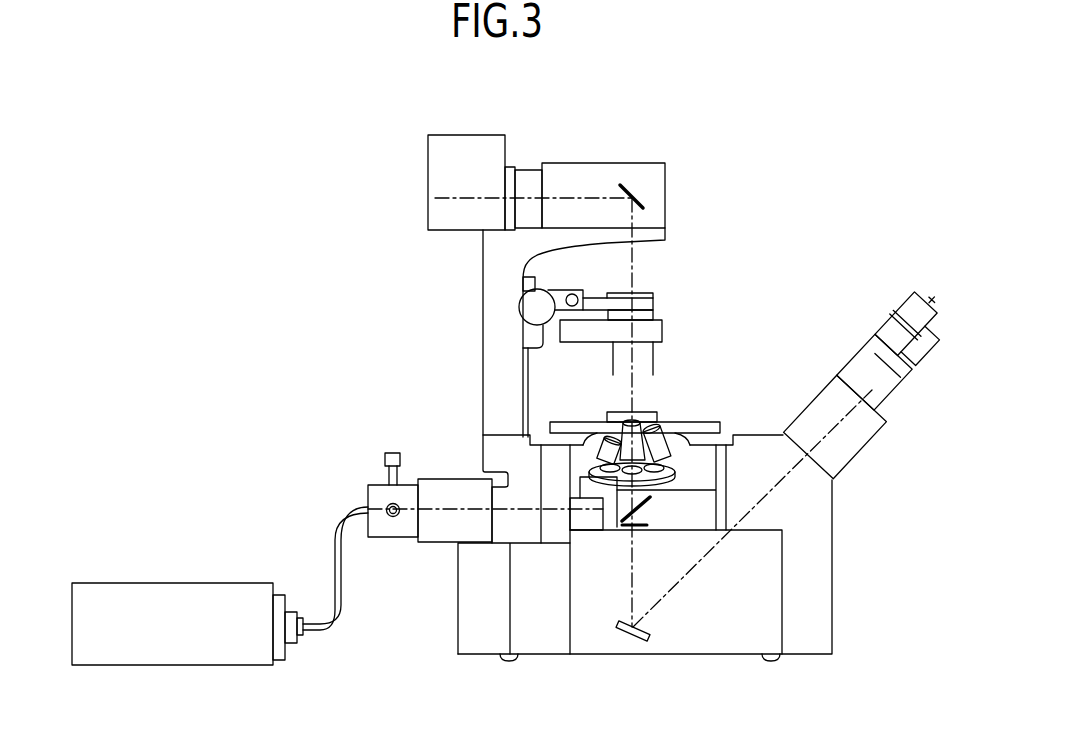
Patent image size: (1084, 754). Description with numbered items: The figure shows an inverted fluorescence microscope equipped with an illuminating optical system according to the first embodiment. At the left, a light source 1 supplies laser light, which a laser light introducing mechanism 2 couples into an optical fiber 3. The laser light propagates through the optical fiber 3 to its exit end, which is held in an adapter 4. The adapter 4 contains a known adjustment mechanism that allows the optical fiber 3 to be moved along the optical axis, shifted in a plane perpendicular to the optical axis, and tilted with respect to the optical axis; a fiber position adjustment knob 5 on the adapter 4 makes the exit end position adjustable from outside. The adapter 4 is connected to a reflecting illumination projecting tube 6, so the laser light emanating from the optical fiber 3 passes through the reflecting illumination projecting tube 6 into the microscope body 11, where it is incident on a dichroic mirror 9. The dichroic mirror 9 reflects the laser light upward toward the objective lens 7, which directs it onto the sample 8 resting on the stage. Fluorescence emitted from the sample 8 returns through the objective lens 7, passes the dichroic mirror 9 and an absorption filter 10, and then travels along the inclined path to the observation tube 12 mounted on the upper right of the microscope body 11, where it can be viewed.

The light source 1 is at (180, 597).
The laser light introducing mechanism 2 is at (290, 613).
The optical fiber 3 is at (333, 530).
The adapter 4 is at (382, 528).
The fiber position adjustment knob 5 is at (390, 452).
The reflecting illumination projecting tube 6 is at (445, 527).
The objective lens 7 is at (657, 420).
The sample 8 is at (643, 413).
The dichroic mirror 9 is at (650, 502).
The absorption filter 10 is at (623, 533).
The microscope body 11 is at (857, 602).
The observation tube 12 is at (866, 360).